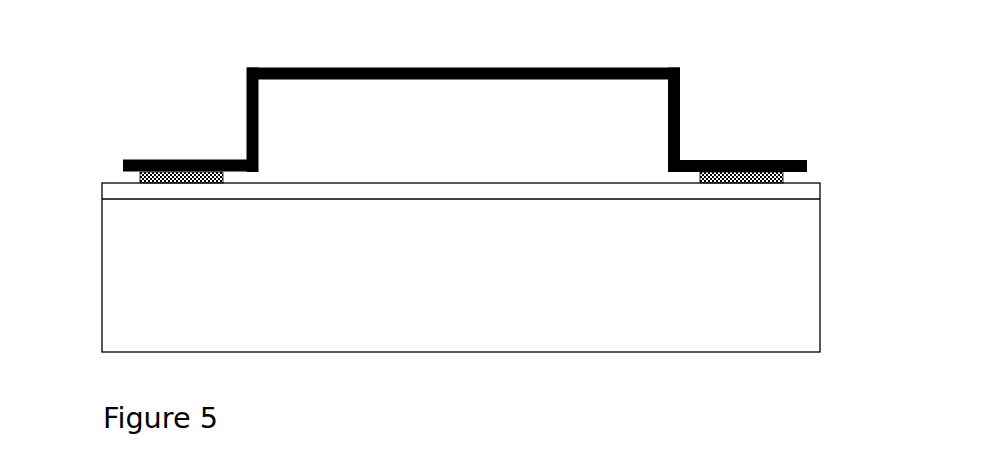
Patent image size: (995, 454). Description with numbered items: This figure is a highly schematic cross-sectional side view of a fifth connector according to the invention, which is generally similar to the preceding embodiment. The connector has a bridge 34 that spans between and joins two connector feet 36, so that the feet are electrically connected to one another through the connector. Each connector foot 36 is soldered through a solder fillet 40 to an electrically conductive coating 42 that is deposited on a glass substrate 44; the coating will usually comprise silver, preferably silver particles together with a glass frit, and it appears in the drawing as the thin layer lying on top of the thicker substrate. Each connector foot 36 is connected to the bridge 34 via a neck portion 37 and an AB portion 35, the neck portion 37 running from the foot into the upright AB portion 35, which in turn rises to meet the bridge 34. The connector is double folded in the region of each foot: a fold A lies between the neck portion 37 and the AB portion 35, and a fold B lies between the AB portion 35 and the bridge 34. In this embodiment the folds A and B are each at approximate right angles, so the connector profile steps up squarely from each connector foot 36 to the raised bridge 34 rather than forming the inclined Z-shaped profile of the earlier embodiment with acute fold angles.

The bridge 34 is at (558, 67).
The AB portion 35 is at (680, 118).
The connector foot 36 is at (178, 160).
The neck portion 37 is at (258, 170).
The solder fillet 40 is at (141, 176).
The electrically conductive coating 42 is at (812, 195).
The glass substrate 44 is at (812, 288).
The fold A is at (247, 158).
The fold B is at (253, 67).